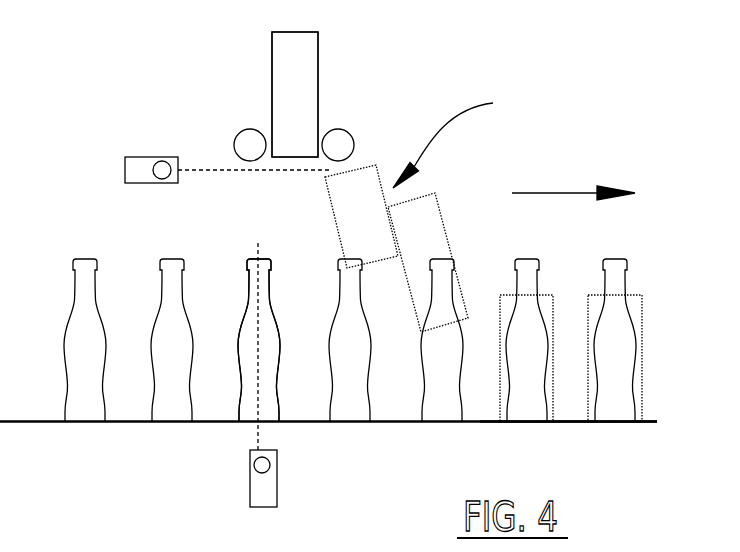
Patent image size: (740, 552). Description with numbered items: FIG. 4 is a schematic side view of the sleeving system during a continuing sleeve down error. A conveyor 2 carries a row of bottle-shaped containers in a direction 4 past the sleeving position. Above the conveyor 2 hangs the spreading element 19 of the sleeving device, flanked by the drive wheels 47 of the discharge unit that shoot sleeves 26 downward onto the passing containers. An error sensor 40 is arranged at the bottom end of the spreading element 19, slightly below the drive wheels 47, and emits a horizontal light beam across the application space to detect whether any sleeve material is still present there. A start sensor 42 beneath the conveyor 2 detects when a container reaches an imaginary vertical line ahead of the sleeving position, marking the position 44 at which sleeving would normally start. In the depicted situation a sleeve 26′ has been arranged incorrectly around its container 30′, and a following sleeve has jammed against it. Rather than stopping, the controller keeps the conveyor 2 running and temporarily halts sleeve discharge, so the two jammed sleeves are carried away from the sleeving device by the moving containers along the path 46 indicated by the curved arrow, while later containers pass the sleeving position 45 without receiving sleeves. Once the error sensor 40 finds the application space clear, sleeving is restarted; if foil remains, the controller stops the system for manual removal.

The conveyor 2 is at (548, 441).
The direction 4 is at (573, 183).
The spreading element 19 is at (307, 58).
The sleeve 26 is at (633, 299).
The sleeve 26′ is at (430, 229).
The container 30′ is at (456, 393).
The error sensor 40 is at (150, 158).
The start sensor 42 is at (250, 485).
The labelling position 44 is at (306, 437).
The conveyor 45 is at (148, 454).
The label flight path 46 is at (463, 138).
The drive wheels 47 is at (349, 141).